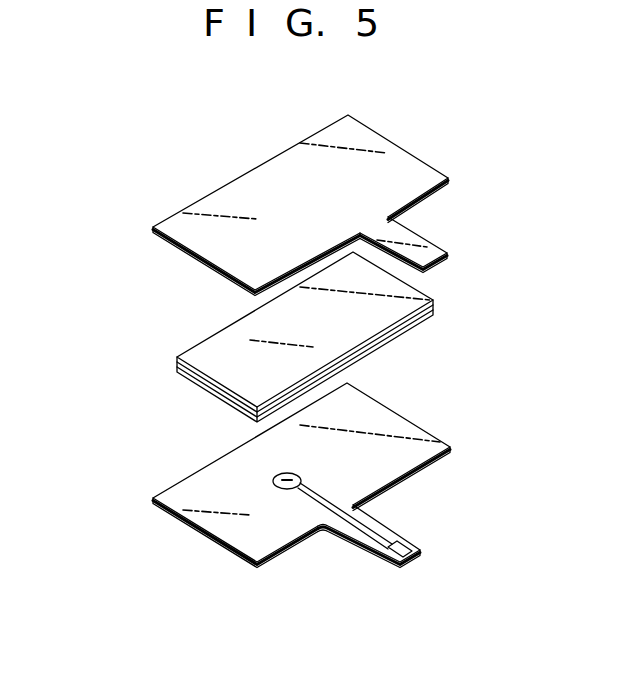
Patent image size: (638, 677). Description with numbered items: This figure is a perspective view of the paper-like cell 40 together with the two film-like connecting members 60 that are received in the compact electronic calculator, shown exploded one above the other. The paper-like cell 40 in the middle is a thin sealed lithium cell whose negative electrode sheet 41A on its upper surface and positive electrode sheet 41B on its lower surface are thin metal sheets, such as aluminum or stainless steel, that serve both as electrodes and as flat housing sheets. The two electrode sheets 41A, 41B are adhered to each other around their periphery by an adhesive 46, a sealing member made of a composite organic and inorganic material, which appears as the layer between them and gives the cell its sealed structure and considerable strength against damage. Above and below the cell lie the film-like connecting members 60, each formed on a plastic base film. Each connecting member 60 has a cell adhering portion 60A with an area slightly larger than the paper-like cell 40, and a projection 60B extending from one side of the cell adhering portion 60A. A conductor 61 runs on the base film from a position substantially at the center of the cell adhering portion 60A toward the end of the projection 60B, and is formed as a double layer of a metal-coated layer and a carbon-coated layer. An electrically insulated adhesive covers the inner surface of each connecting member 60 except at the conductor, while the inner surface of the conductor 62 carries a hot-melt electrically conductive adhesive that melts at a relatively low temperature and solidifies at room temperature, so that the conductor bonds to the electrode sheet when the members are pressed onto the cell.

The film-like connecting member 60 is at (282, 346).
The cell adhering portion 60A is at (292, 158).
The projection 60B is at (415, 235).
The conductor 61 is at (373, 525).
The conductor 62 is at (285, 532).
The paper-like cell 40 is at (255, 347).
The negative electrode sheet 41A is at (225, 337).
The adhesive 46 is at (182, 373).
The positive electrode sheet 41B is at (186, 348).